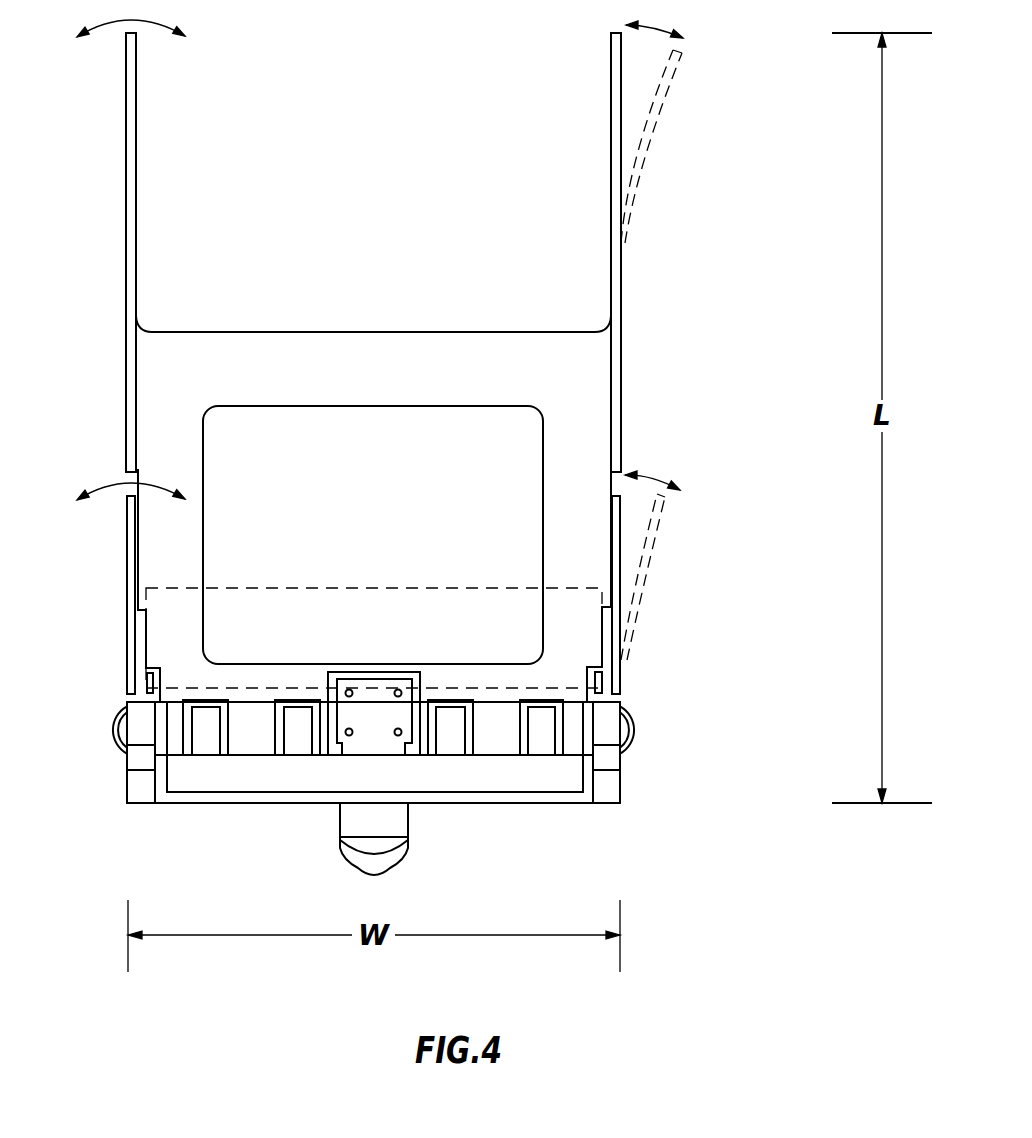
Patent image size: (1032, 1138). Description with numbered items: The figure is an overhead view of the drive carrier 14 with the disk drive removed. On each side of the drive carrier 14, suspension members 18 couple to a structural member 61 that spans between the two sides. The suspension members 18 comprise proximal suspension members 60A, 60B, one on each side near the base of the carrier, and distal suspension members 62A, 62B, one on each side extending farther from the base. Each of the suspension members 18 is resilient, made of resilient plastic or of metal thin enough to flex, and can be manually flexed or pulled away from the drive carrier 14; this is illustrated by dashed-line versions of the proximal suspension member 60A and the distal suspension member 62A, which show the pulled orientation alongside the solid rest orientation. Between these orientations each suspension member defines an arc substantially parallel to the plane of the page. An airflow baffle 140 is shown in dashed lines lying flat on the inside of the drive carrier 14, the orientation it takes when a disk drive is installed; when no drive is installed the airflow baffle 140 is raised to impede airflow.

The drive carrier 14 is at (107, 810).
The suspension members 18 is at (105, 218).
The structural member 61 is at (306, 345).
The distal suspension member 62A is at (611, 72).
The distal suspension member 62B is at (137, 147).
The proximal suspension member 60A is at (657, 523).
The proximal suspension member 60B is at (127, 635).
The airflow baffle 140 is at (350, 588).